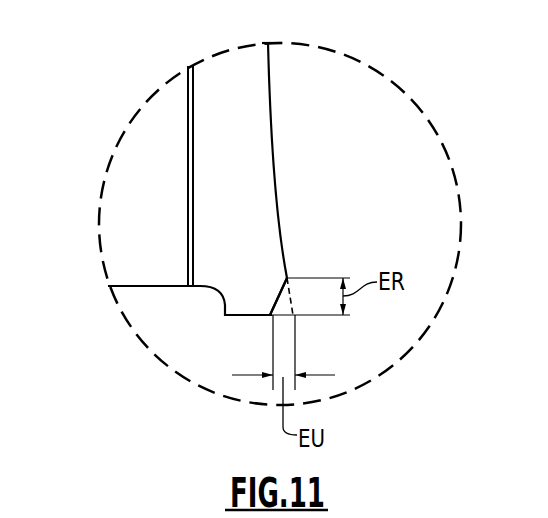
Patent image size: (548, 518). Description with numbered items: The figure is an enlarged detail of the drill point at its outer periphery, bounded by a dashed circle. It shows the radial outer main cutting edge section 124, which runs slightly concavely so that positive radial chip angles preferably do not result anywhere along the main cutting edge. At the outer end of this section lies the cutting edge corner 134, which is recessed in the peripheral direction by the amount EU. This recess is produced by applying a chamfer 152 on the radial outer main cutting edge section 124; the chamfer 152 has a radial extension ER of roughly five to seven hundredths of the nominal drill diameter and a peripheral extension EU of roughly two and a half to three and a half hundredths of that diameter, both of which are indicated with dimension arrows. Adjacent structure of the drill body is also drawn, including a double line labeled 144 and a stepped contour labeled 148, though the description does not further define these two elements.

The radial outer main cutting edge section 124 is at (275, 168).
The cutting edge corner 134 is at (272, 316).
The rib 144 is at (220, 125).
The platform 148 is at (128, 223).
The chamfer 152 is at (278, 298).